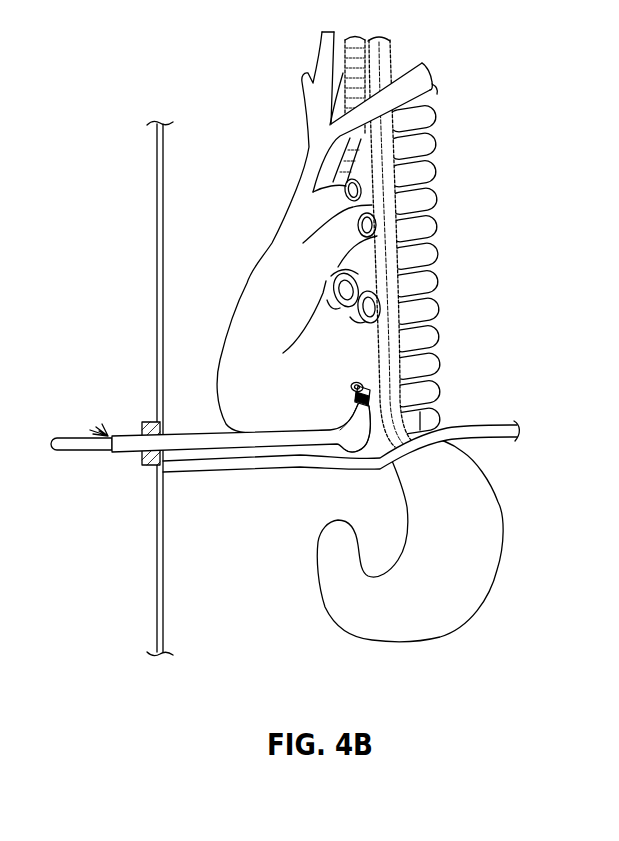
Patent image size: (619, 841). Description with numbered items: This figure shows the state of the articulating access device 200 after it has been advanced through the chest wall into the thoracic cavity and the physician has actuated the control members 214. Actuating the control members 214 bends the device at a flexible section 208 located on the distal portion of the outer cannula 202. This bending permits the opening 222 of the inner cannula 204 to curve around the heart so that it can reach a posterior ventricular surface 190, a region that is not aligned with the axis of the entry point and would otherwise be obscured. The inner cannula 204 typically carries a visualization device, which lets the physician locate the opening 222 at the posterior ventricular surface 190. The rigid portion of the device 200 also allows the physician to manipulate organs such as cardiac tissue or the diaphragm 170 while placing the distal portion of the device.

The diaphragm 170 is at (468, 420).
The posterior ventricular surface 190 is at (428, 331).
The articulating access device 200 is at (185, 440).
The outer cannula 202 is at (246, 440).
The inner cannula 204 is at (427, 403).
The flexible section 208 is at (334, 452).
The control members 214 is at (110, 427).
The opening 222 is at (353, 394).